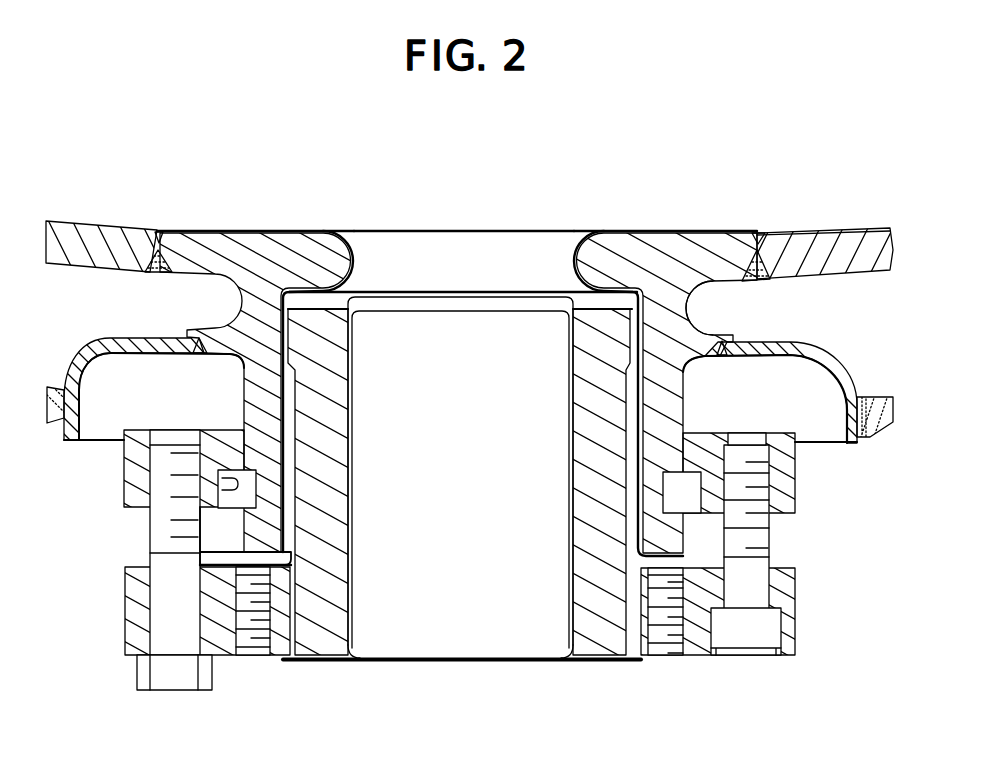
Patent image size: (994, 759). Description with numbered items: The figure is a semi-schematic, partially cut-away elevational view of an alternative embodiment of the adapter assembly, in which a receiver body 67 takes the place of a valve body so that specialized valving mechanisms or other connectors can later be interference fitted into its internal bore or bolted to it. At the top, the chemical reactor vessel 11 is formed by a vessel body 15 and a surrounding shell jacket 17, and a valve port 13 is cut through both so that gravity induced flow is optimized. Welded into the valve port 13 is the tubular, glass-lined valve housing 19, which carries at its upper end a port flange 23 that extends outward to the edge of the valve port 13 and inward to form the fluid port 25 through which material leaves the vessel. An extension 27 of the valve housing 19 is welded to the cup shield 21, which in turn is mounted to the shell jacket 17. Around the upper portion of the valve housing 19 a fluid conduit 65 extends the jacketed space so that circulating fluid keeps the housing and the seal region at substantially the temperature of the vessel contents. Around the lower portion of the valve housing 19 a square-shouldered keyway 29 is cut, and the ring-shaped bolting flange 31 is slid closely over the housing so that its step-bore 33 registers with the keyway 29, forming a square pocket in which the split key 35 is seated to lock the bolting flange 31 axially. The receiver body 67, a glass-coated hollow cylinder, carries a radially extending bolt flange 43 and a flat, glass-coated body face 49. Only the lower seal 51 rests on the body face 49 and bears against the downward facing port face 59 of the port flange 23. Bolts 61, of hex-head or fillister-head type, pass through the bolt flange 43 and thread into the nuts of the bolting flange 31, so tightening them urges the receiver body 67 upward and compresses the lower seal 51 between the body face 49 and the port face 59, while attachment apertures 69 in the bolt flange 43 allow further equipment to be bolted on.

The vessel 11 is at (800, 212).
The valve port 13 is at (758, 233).
The vessel body 15 is at (856, 228).
The shell jacket 17 is at (880, 440).
The valve housing 19 is at (649, 234).
The cup shield 21 is at (810, 462).
The port flange 23 is at (601, 232).
The fluid port 25 is at (551, 252).
The extension 27 is at (698, 363).
The keyway 29 is at (677, 497).
The bolting flange 31 is at (124, 471).
The step-bore 33 is at (232, 482).
The key 35 is at (228, 517).
The bolt flange 43 is at (125, 621).
The body face 49 is at (306, 305).
The lower seal 51 is at (379, 298).
The port face 59 is at (592, 318).
The bolts 61 is at (137, 672).
The fluid conduit 65 is at (713, 309).
The receiver body 67 is at (308, 662).
The attachment apertures 69 is at (253, 640).